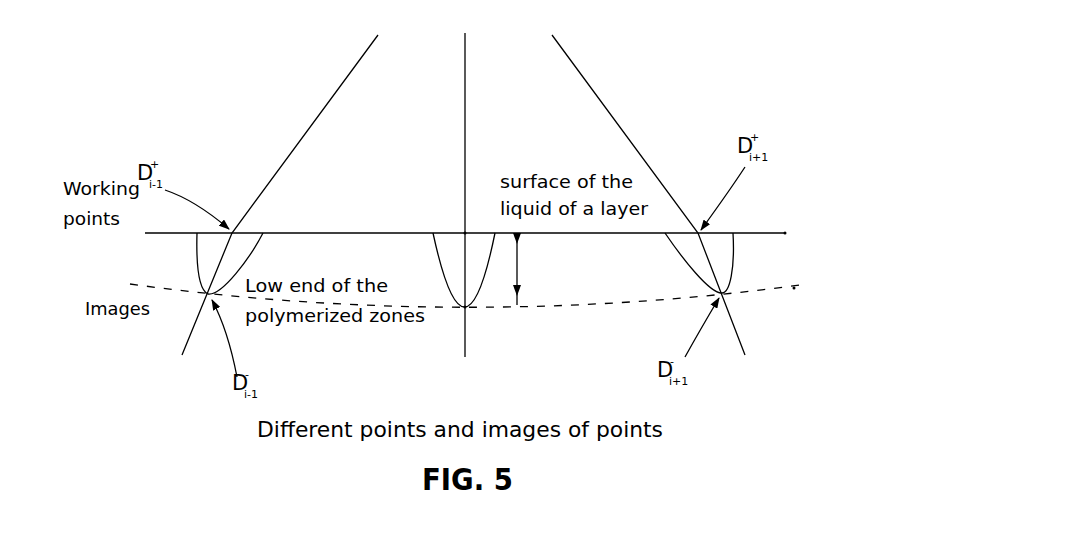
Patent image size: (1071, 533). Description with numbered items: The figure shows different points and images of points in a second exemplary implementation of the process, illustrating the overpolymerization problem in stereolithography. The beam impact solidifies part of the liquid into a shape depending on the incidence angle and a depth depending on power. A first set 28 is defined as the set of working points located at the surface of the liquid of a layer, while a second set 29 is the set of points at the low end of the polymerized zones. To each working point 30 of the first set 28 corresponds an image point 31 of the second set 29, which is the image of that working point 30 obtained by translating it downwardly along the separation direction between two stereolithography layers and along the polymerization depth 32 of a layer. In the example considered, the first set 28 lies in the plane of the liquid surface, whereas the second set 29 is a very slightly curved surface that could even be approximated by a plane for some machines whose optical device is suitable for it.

The set D+ 28 is at (786, 230).
The set D- 29 is at (795, 292).
The point Di+ 30 is at (461, 230).
The point Di- 31 is at (461, 310).
The polymerization depth 32 is at (529, 269).